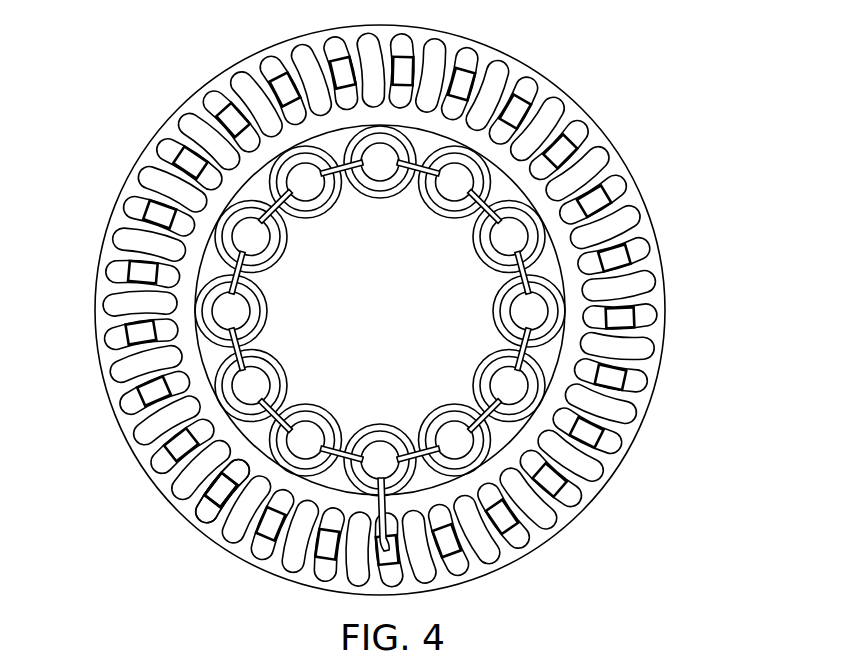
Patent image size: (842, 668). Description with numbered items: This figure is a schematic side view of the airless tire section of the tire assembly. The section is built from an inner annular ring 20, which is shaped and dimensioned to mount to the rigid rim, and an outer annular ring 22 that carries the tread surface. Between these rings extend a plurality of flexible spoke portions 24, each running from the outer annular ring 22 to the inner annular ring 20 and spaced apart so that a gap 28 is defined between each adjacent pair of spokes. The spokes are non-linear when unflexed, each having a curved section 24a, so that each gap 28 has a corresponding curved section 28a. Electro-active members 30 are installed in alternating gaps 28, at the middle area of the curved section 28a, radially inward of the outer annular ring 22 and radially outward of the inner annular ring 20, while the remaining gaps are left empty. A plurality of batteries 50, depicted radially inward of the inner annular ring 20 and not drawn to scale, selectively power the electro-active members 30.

The inner annular ring 20 is at (518, 163).
The outer annular ring 22 is at (648, 218).
The flexible spoke portion 24 is at (248, 550).
The curved section 24a is at (230, 503).
The gap 28 is at (595, 543).
The curved section 28a is at (310, 70).
The electro-active member 30 is at (513, 112).
The battery 50 is at (308, 188).